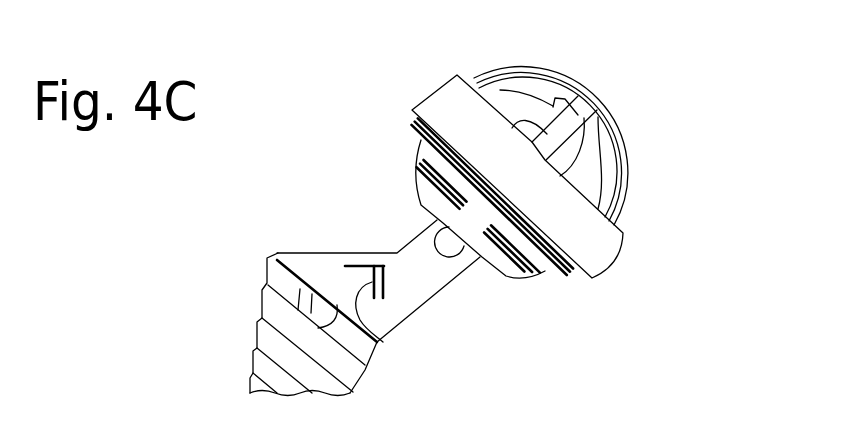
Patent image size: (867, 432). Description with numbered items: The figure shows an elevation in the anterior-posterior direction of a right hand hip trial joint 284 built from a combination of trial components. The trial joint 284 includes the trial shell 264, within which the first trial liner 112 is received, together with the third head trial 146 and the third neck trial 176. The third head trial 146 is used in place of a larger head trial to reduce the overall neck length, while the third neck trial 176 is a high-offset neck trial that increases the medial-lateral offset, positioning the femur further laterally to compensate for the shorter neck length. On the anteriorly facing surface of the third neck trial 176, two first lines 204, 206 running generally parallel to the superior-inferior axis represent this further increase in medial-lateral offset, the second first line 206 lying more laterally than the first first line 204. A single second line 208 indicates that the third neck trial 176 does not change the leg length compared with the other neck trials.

The trial joint 284 is at (712, 124).
The trial shell 264 is at (427, 75).
The first trial liner 112 is at (412, 138).
The third head trial 146 is at (536, 292).
The third neck trial 176 is at (428, 320).
The first first line 204 is at (386, 280).
The second line 208 is at (358, 265).
The second first line 206 is at (389, 343).